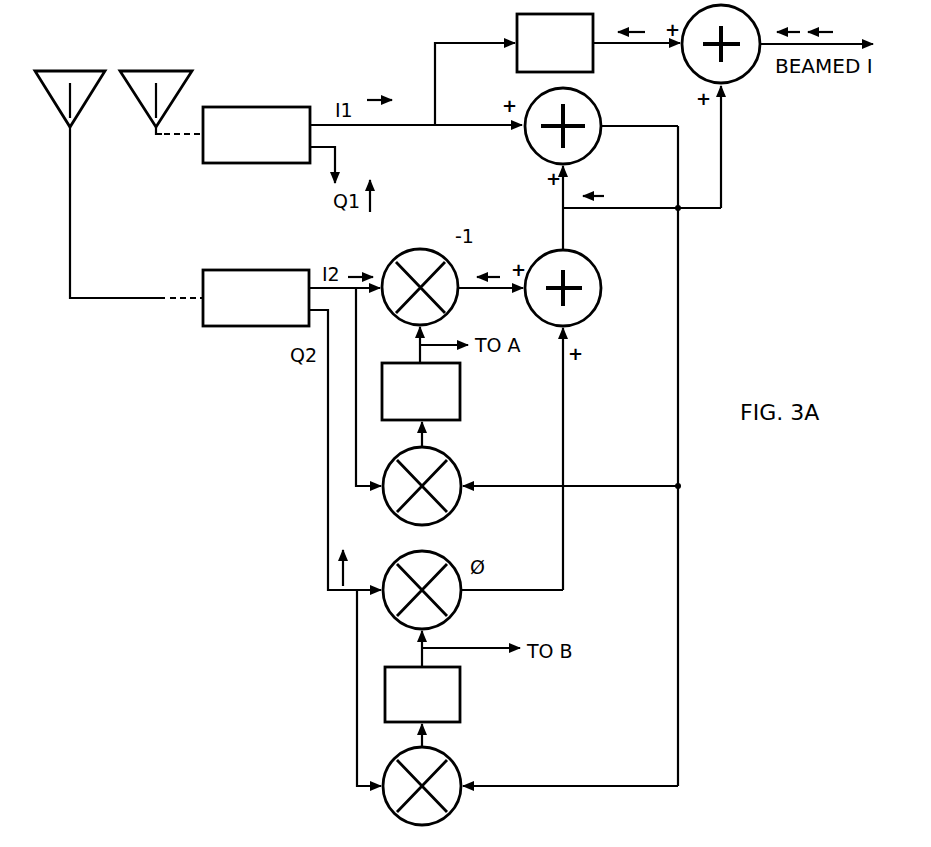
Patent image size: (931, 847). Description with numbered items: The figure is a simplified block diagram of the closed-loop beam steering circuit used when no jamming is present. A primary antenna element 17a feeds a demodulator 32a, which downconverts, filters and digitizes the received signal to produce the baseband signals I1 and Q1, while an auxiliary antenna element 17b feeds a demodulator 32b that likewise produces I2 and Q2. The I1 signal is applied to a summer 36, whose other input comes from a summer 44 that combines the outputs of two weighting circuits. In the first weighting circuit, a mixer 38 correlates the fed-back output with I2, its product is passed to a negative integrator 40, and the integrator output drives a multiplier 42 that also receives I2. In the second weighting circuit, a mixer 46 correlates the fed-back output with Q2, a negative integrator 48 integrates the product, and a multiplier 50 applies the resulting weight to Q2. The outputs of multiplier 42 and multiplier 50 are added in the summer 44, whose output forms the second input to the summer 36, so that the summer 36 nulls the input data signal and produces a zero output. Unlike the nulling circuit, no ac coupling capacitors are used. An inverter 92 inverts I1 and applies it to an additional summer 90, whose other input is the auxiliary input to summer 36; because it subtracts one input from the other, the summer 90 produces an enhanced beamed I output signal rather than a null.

The primary antenna element 17a is at (178, 70).
The auxiliary antenna element 17b is at (92, 70).
The demodulator 32a is at (256, 107).
The demodulator 32b is at (256, 270).
The inverter 92 is at (600, 52).
The summer 90 is at (748, 82).
The summer 36 is at (595, 158).
The multiplier 42 is at (420, 249).
The summer 44 is at (601, 290).
The negative integrator 40 is at (460, 392).
The mixer 38 is at (447, 520).
The multiplier 50 is at (450, 624).
The negative integrator 48 is at (460, 695).
The mixer 46 is at (450, 820).